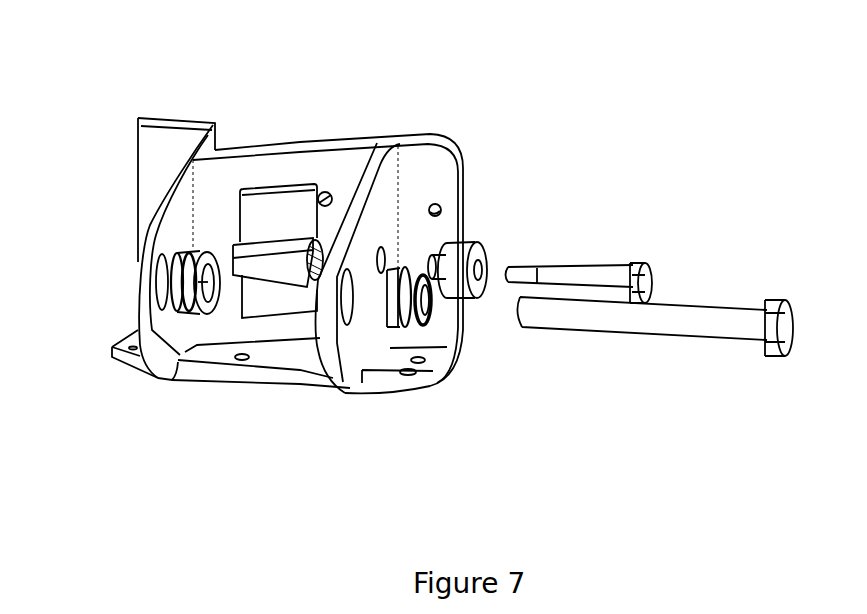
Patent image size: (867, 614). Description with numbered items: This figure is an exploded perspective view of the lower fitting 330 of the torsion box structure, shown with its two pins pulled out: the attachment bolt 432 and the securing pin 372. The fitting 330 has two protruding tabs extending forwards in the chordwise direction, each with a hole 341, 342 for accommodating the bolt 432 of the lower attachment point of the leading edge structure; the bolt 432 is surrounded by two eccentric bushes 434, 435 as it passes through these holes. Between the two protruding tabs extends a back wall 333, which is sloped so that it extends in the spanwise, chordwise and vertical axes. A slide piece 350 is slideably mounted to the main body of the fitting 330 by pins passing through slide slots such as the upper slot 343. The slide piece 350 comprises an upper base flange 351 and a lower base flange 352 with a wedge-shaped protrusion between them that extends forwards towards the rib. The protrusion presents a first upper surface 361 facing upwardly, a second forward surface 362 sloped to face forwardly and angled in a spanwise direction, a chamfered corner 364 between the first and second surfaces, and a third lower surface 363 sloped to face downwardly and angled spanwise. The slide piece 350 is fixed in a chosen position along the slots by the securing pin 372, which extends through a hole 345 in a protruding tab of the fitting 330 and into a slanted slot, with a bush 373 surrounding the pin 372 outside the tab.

The lower fitting 330 is at (301, 270).
The back wall 333 is at (310, 142).
The hole 341 is at (138, 283).
The hole 342 is at (360, 330).
The upper slot 343 is at (326, 193).
The hole 345 is at (392, 292).
The slide piece 350 is at (238, 171).
The upper base flange 351 is at (228, 281).
The lower base flange 352 is at (262, 302).
The first upper surface 361 is at (295, 238).
The second forward surface 362 is at (266, 272).
The third lower surface 363 is at (287, 290).
The chamfered corner 364 is at (257, 248).
The securing pin 372 is at (608, 250).
The bush 373 is at (465, 247).
The attachment bolt 432 is at (695, 297).
The eccentric bush 434 is at (200, 312).
The eccentric bush 435 is at (415, 315).